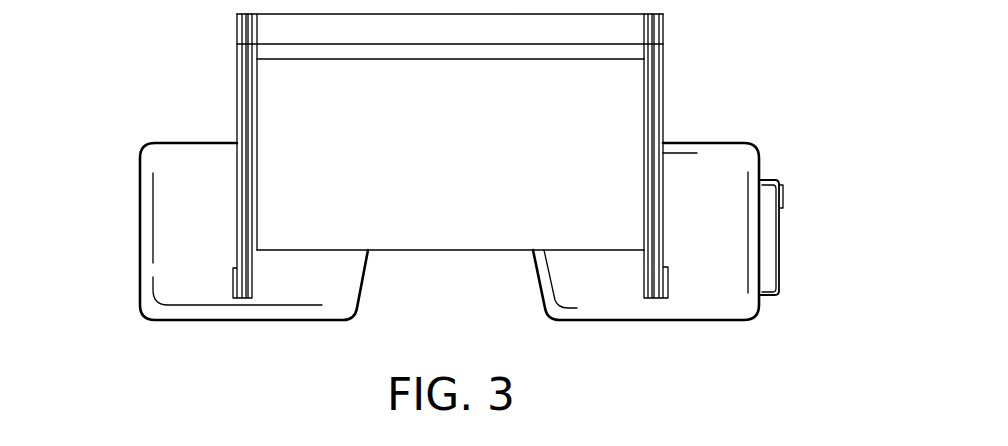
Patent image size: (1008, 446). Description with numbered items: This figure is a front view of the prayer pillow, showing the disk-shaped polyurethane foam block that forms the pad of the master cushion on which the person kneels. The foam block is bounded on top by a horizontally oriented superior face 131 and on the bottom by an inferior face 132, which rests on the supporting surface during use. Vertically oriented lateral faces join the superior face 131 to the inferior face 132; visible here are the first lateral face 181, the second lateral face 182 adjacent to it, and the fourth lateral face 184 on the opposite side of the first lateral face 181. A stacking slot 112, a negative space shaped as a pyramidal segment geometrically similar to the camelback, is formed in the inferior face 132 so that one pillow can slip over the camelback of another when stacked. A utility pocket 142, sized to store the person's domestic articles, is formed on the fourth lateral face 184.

The stacking slot 112 is at (433, 265).
The superior face 131 is at (703, 142).
The inferior face 132 is at (685, 320).
The utility pocket 142 is at (779, 233).
The first lateral face 181 is at (593, 293).
The second lateral face 182 is at (140, 244).
The fourth lateral face 184 is at (762, 168).